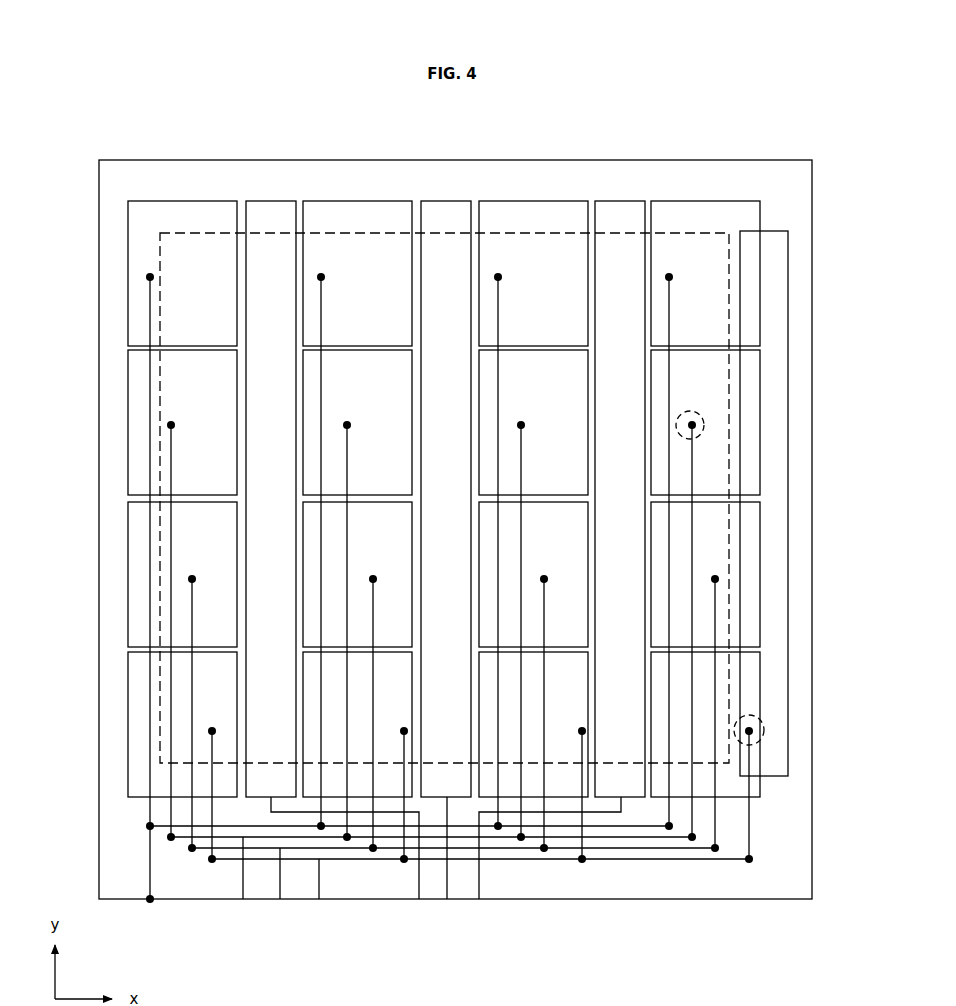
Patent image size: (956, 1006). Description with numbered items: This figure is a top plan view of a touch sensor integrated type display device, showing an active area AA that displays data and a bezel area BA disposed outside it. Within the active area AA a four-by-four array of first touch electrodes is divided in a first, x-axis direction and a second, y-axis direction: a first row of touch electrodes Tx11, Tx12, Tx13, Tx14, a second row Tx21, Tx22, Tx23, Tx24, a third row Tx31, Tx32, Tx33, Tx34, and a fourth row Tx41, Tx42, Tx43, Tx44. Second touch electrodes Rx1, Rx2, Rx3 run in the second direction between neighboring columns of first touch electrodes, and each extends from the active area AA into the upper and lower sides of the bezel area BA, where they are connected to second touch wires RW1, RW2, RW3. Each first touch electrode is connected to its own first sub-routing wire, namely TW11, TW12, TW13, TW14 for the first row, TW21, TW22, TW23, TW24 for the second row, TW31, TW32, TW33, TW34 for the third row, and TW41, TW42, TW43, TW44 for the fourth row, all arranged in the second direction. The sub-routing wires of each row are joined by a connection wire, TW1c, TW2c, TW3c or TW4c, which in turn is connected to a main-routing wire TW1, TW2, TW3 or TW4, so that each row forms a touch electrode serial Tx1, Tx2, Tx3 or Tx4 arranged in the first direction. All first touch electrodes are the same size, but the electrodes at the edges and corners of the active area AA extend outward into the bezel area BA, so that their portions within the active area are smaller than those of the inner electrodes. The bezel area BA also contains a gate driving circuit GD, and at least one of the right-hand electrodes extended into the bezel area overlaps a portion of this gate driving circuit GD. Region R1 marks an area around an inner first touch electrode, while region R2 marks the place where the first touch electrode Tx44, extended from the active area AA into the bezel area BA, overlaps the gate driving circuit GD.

The bezel area BA is at (786, 170).
The active area AA is at (668, 222).
The gate driving circuit GD is at (778, 281).
The 1-1 touch electrode serial Tx1 is at (108, 281).
The 1-2 touch electrode serial Tx2 is at (108, 431).
The 1-3 touch electrode serial Tx3 is at (108, 582).
The 1-4 touch electrode serial Tx4 is at (108, 732).
The 1-1 touch electrode Tx11 is at (182, 273).
The 1-1 touch electrode Tx12 is at (357, 273).
The 1-1 touch electrode Tx13 is at (533, 273).
The 1-1 touch electrode Tx14 is at (705, 273).
The 1-2 touch electrode Tx21 is at (182, 422).
The 1-2 touch electrode Tx22 is at (357, 422).
The 1-2 touch electrode Tx23 is at (533, 422).
The 1-2 touch electrode Tx24 is at (705, 422).
The 1-3 touch electrode Tx31 is at (182, 574).
The 1-3 touch electrode Tx32 is at (357, 574).
The 1-3 touch electrode Tx33 is at (533, 574).
The 1-3 touch electrode Tx34 is at (705, 574).
The 1-4 touch electrode Tx41 is at (182, 724).
The 1-4 touch electrode Tx42 is at (357, 724).
The 1-4 touch electrode Tx43 is at (533, 724).
The 1-4 touch electrode Tx44 is at (705, 724).
The 2-1 touch electrode Rx1 is at (271, 499).
The 2-2 touch electrode Rx2 is at (446, 499).
The 2-3 touch electrode Rx3 is at (620, 499).
The 1-1 sub-routing wire TW11 is at (150, 313).
The 1-1 sub-routing wire TW12 is at (321, 313).
The 1-1 sub-routing wire TW13 is at (498, 313).
The 1-1 sub-routing wire TW14 is at (669, 313).
The 1-2 sub-routing wire TW21 is at (171, 463).
The 1-2 sub-routing wire TW22 is at (347, 463).
The 1-2 sub-routing wire TW23 is at (521, 463).
The 1-2 sub-routing wire TW24 is at (692, 463).
The 1-3 sub-routing wire TW31 is at (193, 597).
The 1-3 sub-routing wire TW32 is at (374, 597).
The 1-3 sub-routing wire TW33 is at (545, 597).
The 1-3 sub-routing wire TW34 is at (716, 597).
The 1-4 sub-routing wire TW41 is at (213, 750).
The 1-4 sub-routing wire TW42 is at (405, 750).
The 1-4 sub-routing wire TW43 is at (583, 750).
The 1-4 sub-routing wire TW44 is at (750, 758).
The 1-1 main-routing wire TW1 is at (151, 882).
The 1-2 main-routing wire TW2 is at (240, 882).
The 1-3 main-routing wire TW3 is at (278, 882).
The 1-4 main-routing wire TW4 is at (317, 882).
The 1-1 connection wire TW1c is at (618, 827).
The 1-2 connection wire TW2c is at (655, 838).
The 1-3 connection wire TW3c is at (692, 849).
The 1-4 connection wire TW4c is at (728, 860).
The second touch wire RW1 is at (417, 882).
The second touch wire RW2 is at (445, 882).
The second touch wire RW3 is at (477, 882).
The region R1 is at (706, 420).
The region R2 is at (765, 722).